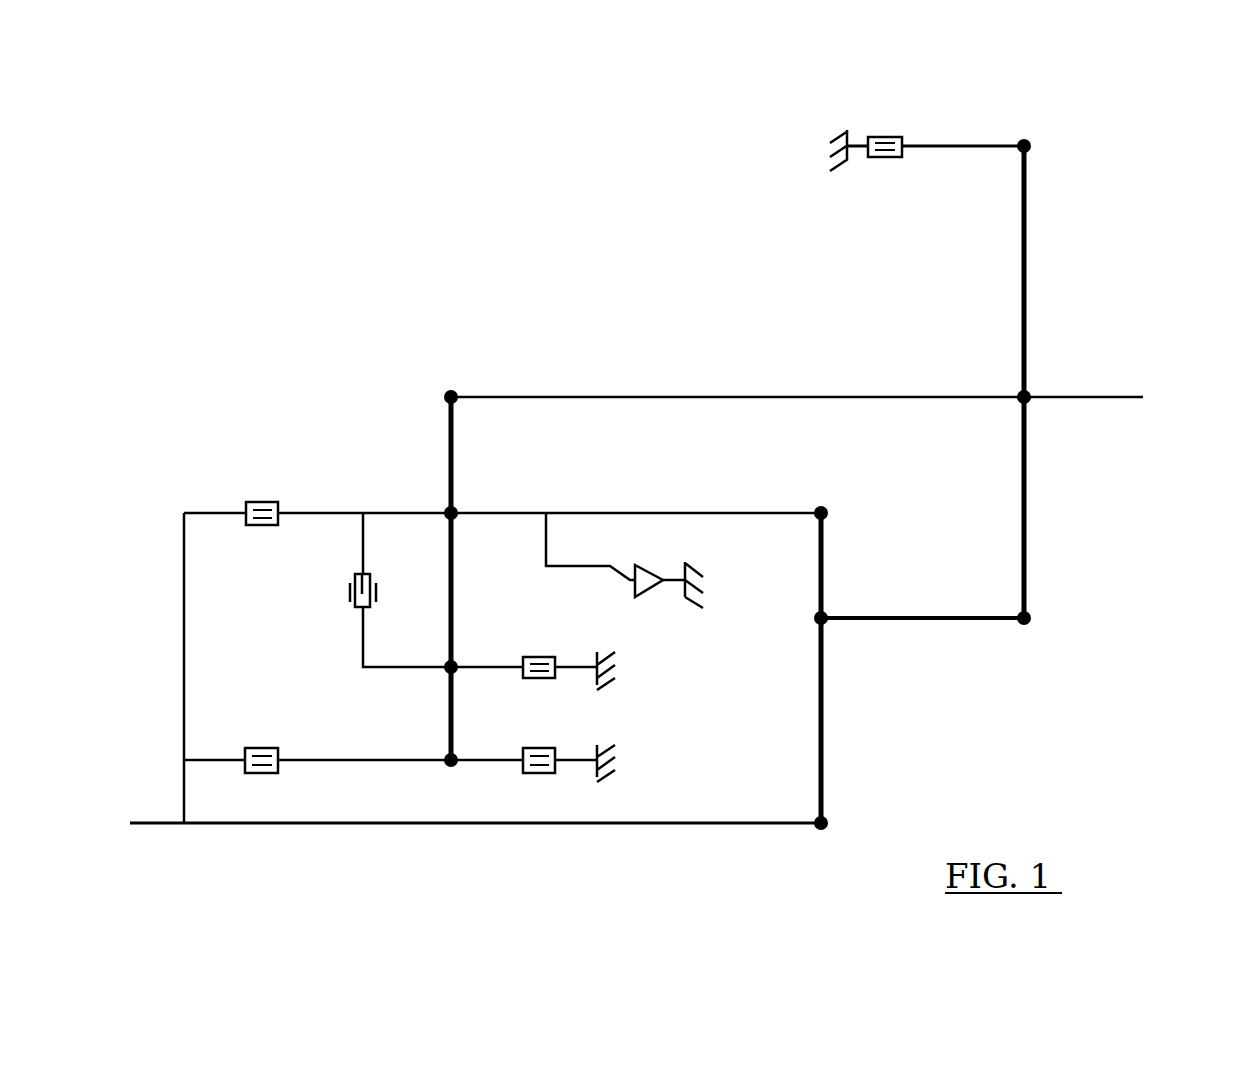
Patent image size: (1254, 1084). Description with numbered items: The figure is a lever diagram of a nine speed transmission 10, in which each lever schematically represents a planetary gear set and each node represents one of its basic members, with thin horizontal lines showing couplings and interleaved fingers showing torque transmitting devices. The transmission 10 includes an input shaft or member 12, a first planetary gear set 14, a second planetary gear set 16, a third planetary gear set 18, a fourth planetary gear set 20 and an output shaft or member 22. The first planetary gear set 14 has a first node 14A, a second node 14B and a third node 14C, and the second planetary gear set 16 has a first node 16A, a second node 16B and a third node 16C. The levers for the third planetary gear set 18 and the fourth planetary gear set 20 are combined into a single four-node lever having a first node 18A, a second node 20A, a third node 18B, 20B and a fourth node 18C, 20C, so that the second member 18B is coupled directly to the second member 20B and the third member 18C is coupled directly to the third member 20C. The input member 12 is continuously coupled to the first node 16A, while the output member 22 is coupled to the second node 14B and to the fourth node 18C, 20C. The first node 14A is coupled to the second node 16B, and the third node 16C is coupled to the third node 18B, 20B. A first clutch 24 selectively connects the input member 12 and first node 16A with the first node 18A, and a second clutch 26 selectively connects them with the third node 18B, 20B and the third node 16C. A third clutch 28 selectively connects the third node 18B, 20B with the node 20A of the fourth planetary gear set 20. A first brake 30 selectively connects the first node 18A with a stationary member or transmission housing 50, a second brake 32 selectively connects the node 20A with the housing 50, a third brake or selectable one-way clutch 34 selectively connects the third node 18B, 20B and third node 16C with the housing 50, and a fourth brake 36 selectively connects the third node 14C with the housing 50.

The nine speed transmission 10 is at (1152, 177).
The input shaft or member 12 is at (147, 826).
The first planetary gear set 14 is at (1025, 640).
The first node 14A is at (1031, 617).
The second node 14B is at (1017, 394).
The third node 14C is at (1031, 146).
The second planetary gear set 16 is at (824, 845).
The first node 16A is at (828, 822).
The second node 16B is at (828, 616).
The third node 16C is at (828, 512).
The third planetary gear set 18 is at (651, 600).
The first node 18A is at (451, 767).
The second member (third node) 18B is at (523, 495).
The third member (fourth node) 18C is at (426, 363).
The fourth planetary gear set 20 is at (482, 423).
The second node 20A is at (455, 662).
The second member (third node) 20B is at (457, 510).
The third member (fourth node) 20C is at (451, 390).
The output shaft or member 22 is at (1093, 399).
The first clutch 24 is at (262, 748).
The second clutch 26 is at (265, 502).
The third clutch 28 is at (352, 597).
The first brake 30 is at (538, 775).
The second brake 32 is at (544, 680).
The third brake or selectable one-way clutch 34 is at (640, 565).
The fourth brake 36 is at (895, 137).
The stationary member or transmission housing 50 is at (843, 130).